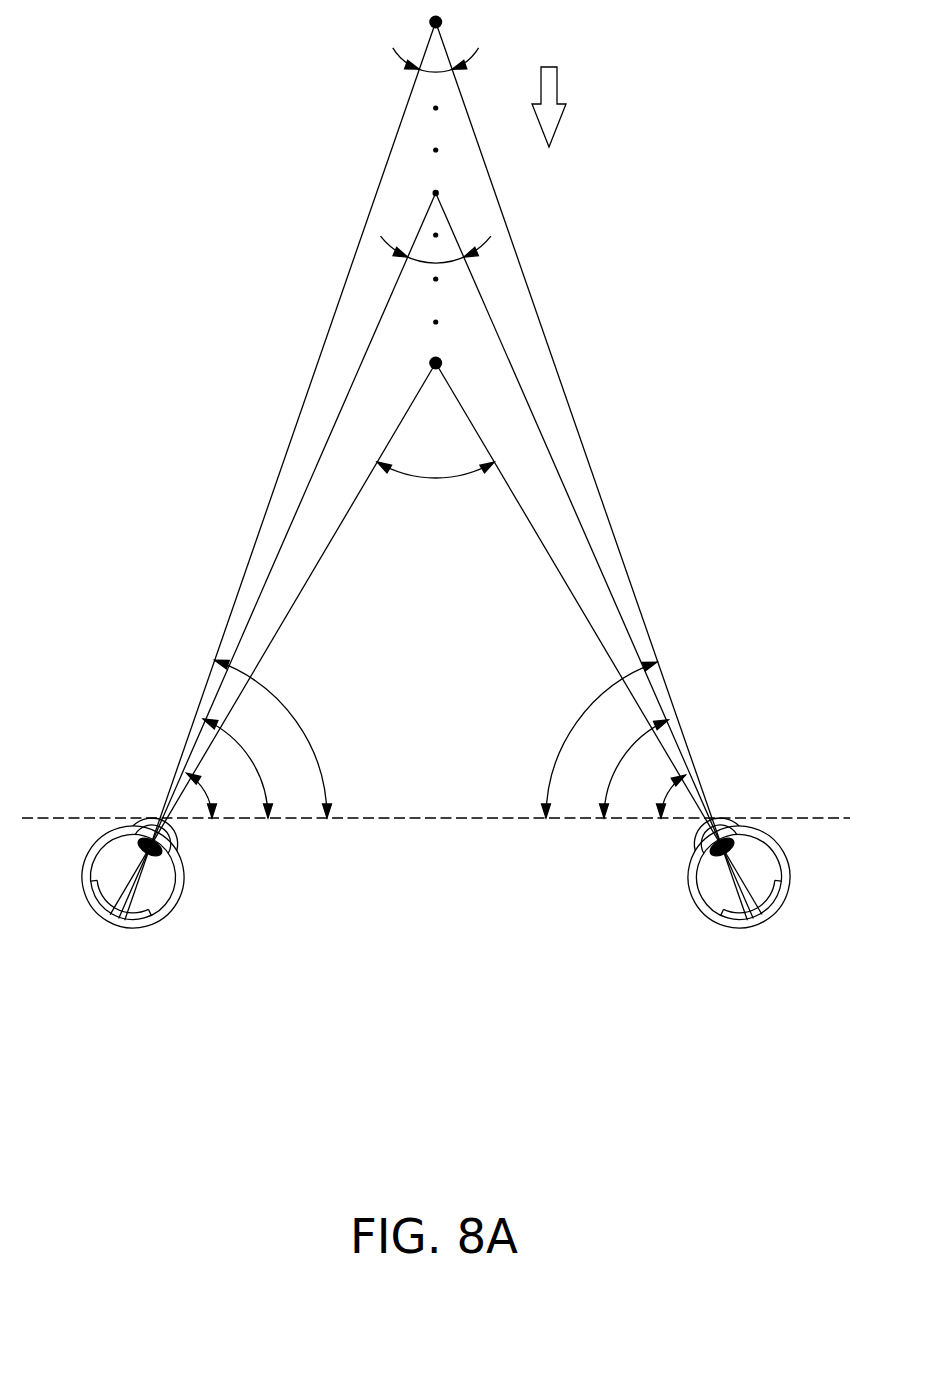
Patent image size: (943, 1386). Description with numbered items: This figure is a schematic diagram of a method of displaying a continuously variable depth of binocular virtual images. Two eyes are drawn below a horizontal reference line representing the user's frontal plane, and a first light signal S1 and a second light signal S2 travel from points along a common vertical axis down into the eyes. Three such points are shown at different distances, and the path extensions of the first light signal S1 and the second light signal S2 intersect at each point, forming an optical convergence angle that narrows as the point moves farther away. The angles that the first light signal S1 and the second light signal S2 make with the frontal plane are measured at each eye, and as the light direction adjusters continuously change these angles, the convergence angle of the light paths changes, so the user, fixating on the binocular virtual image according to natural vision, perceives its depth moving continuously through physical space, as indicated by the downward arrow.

The first light signal S1 is at (592, 471).
The second light signal S2 is at (280, 471).